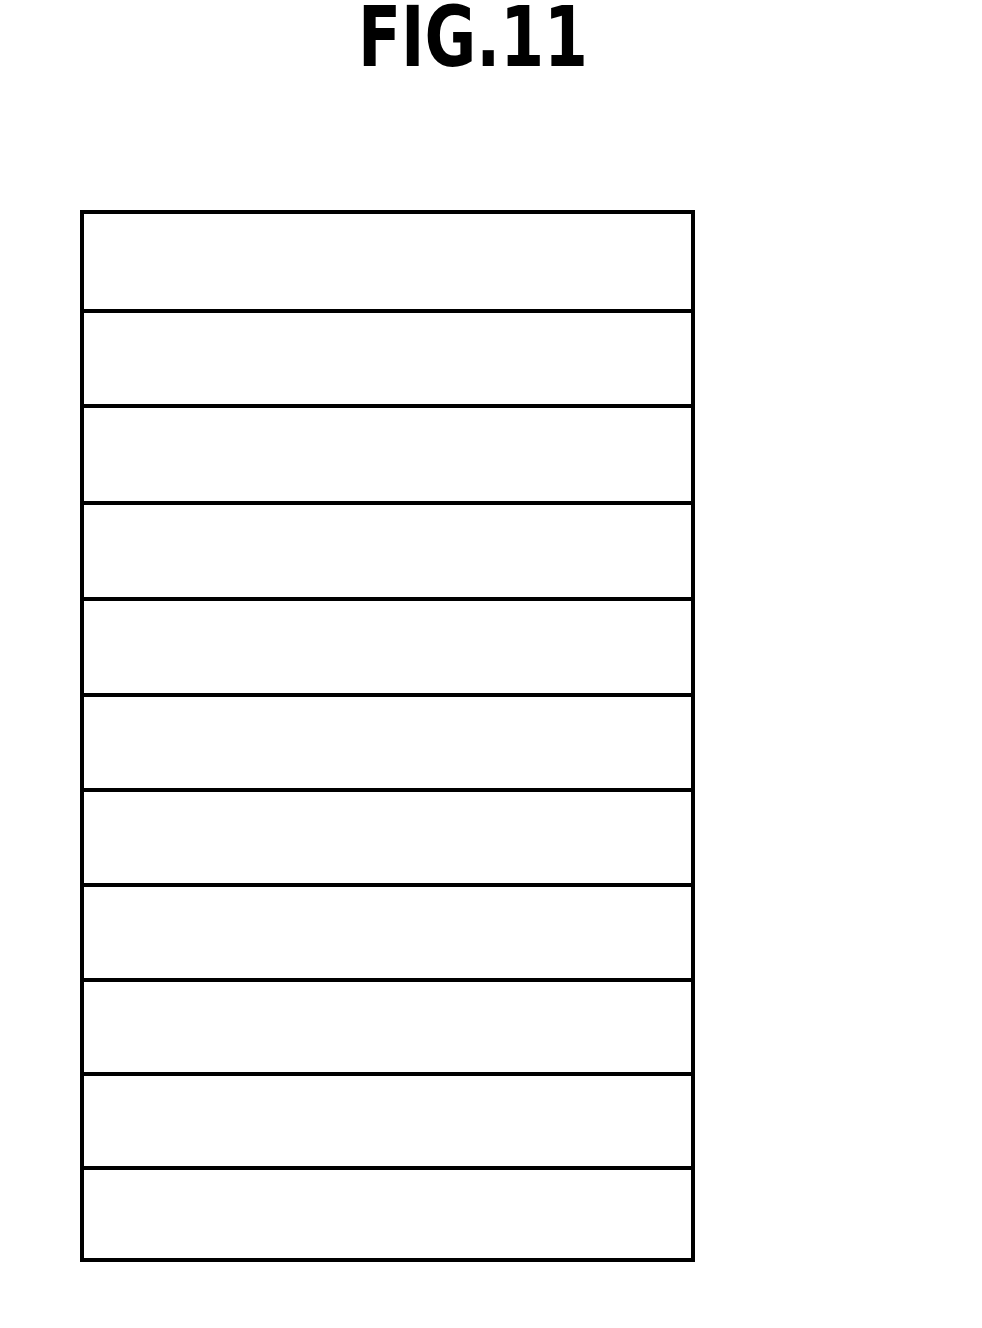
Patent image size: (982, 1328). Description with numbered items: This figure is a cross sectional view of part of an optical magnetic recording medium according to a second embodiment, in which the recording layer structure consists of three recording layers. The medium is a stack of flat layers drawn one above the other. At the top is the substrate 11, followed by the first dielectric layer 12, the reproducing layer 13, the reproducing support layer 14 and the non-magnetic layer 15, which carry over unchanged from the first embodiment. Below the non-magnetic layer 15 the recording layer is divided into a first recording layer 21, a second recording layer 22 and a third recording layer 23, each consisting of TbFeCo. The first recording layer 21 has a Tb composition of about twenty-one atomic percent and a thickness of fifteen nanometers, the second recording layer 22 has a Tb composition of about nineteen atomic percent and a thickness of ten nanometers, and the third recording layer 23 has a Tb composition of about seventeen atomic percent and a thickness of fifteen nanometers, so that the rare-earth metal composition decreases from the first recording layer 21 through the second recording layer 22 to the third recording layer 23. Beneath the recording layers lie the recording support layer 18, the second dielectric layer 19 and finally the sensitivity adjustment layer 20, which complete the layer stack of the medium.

The substrate 11 is at (693, 262).
The first dielectric layer 12 is at (693, 360).
The reproducing layer 13 is at (693, 456).
The reproducing support layer 14 is at (693, 552).
The non-magnetic layer 15 is at (693, 648).
The first recording layer 21 is at (693, 744).
The second recording layer 22 is at (693, 838).
The third recording layer 23 is at (693, 934).
The recording support layer 18 is at (693, 1028).
The second dielectric layer 19 is at (693, 1122).
The sensitivity adjustment layer 20 is at (693, 1215).